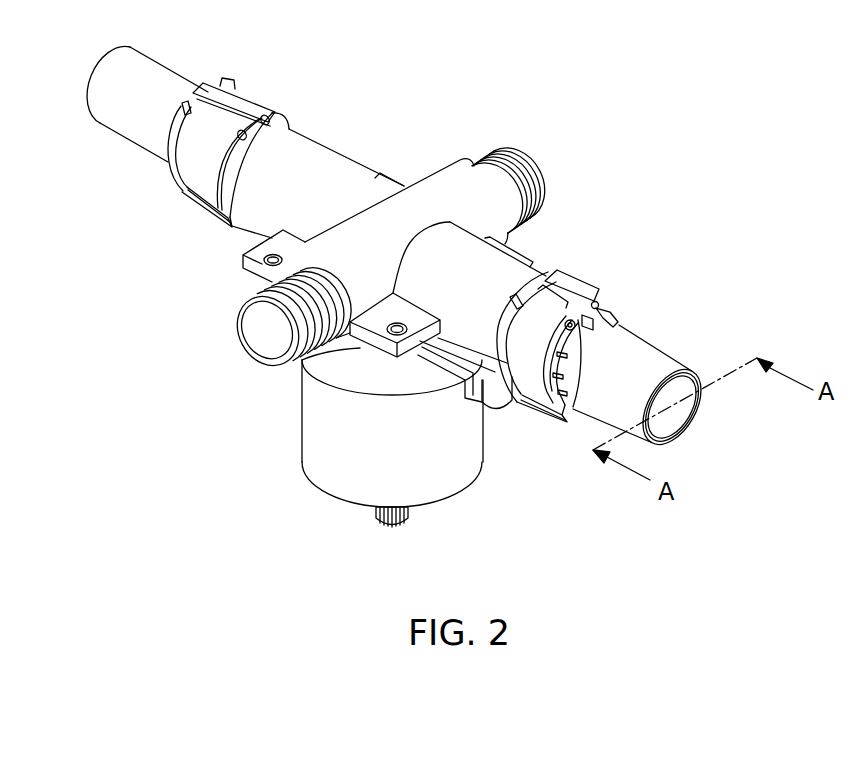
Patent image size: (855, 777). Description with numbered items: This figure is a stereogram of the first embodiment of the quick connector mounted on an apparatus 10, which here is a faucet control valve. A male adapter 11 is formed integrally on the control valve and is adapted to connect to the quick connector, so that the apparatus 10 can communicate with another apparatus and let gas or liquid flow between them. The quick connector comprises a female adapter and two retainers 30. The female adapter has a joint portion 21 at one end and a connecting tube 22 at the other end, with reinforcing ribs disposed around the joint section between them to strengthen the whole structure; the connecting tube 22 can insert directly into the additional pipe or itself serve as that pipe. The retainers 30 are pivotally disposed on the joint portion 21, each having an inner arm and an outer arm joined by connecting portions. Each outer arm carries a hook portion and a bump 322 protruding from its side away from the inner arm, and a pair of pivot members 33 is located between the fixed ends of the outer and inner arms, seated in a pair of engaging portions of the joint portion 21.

The apparatus 10 is at (395, 286).
The male adapter 11 is at (267, 218).
The joint portion 21 is at (535, 402).
The connecting tube 22 is at (653, 360).
The retainer 30 is at (380, 268).
The pivot members 33 is at (617, 310).
The bump 322 is at (182, 197).